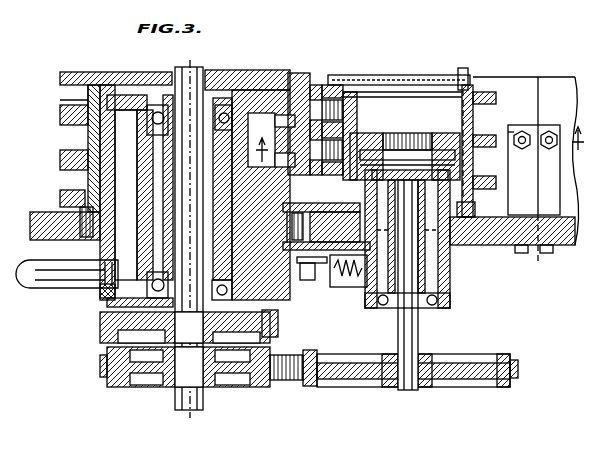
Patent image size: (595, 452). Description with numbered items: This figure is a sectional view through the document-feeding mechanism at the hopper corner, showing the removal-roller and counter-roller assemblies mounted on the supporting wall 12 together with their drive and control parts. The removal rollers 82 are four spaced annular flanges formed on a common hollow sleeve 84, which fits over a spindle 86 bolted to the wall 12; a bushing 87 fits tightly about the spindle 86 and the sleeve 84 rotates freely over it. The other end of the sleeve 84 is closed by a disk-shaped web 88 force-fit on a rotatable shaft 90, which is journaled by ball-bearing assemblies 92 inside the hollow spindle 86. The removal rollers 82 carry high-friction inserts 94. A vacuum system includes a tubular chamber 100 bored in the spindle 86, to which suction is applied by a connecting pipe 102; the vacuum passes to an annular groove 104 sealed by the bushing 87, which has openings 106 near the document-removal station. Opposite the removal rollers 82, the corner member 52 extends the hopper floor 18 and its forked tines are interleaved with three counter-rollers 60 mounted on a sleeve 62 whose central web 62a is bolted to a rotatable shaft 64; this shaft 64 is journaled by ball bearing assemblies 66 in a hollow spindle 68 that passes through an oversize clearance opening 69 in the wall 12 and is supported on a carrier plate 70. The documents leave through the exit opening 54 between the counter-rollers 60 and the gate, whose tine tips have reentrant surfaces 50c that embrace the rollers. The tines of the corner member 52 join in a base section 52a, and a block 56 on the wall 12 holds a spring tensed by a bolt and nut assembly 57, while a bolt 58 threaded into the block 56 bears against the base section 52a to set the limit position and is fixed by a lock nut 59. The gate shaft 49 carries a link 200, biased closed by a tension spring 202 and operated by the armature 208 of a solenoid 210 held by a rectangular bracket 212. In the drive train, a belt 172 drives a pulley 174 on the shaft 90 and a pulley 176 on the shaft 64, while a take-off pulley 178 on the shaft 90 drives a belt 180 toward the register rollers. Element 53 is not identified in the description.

The supporting wall 12 is at (63, 241).
The hopper floor 18 is at (560, 77).
The shaft 49 is at (300, 255).
The reentrant surface 50c is at (316, 85).
The corner member 52 is at (396, 75).
The base section 52a is at (522, 77).
The pin 53 is at (464, 68).
The exit opening 54 is at (318, 88).
The block 56 is at (566, 188).
The bolt and nut assembly 57 is at (549, 131).
The bolt 58 is at (522, 131).
The lock nut 59 is at (512, 134).
The counter-rollers 60 is at (484, 92).
The sleeve 62 is at (357, 104).
The disk-shaped web 62a is at (400, 133).
The rotatable shaft 64 is at (408, 392).
The ball bearing assemblies 66 is at (463, 280).
The hollow spindle 68 is at (452, 300).
The clearance opening 69 is at (395, 252).
The carrier plate 70 is at (480, 205).
The removal rollers 82 is at (80, 72).
The sleeve 84 is at (70, 92).
The spindle 86 is at (262, 238).
The bushing 87 is at (88, 132).
The disk-shaped web 88 is at (112, 72).
The rotatable shaft 90 is at (185, 412).
The ball-bearing assemblies 92 is at (160, 128).
The inserts 94 is at (60, 74).
The tubular chamber 100 is at (106, 294).
The connecting pipe 102 is at (46, 288).
The annular groove 104 is at (258, 70).
The openings 106 is at (292, 70).
The belt 172 is at (290, 382).
The pulley 174 is at (120, 390).
The pulley 176 is at (350, 384).
The take-off pulley 178 is at (104, 340).
The belt 180 is at (280, 328).
The link 200 is at (302, 280).
The tension spring 202 is at (364, 288).
The armature 208 is at (300, 243).
The solenoid 210 is at (340, 288).
The rectangular bracket 212 is at (335, 227).